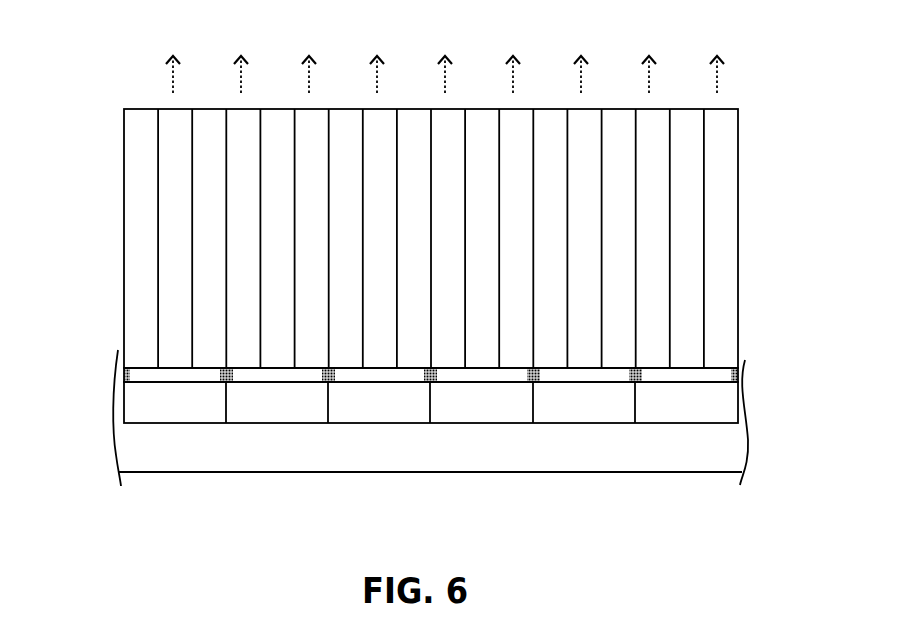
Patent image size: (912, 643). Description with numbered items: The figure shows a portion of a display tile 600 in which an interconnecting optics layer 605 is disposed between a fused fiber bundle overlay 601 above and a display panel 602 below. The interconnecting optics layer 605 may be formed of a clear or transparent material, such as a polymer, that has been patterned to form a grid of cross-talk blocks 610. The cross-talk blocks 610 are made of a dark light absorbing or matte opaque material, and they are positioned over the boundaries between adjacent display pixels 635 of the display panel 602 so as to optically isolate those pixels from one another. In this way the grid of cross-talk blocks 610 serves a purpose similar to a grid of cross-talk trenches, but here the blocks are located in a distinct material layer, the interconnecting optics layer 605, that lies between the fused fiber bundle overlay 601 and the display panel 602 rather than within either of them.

The display tile 600 is at (797, 76).
The fused fiber bundle overlay 601 is at (100, 109).
The display panel 602 is at (384, 418).
The interconnecting optics layer 605 is at (478, 426).
The cross-talk blocks 610 is at (233, 379).
The display pixels 635 is at (291, 413).